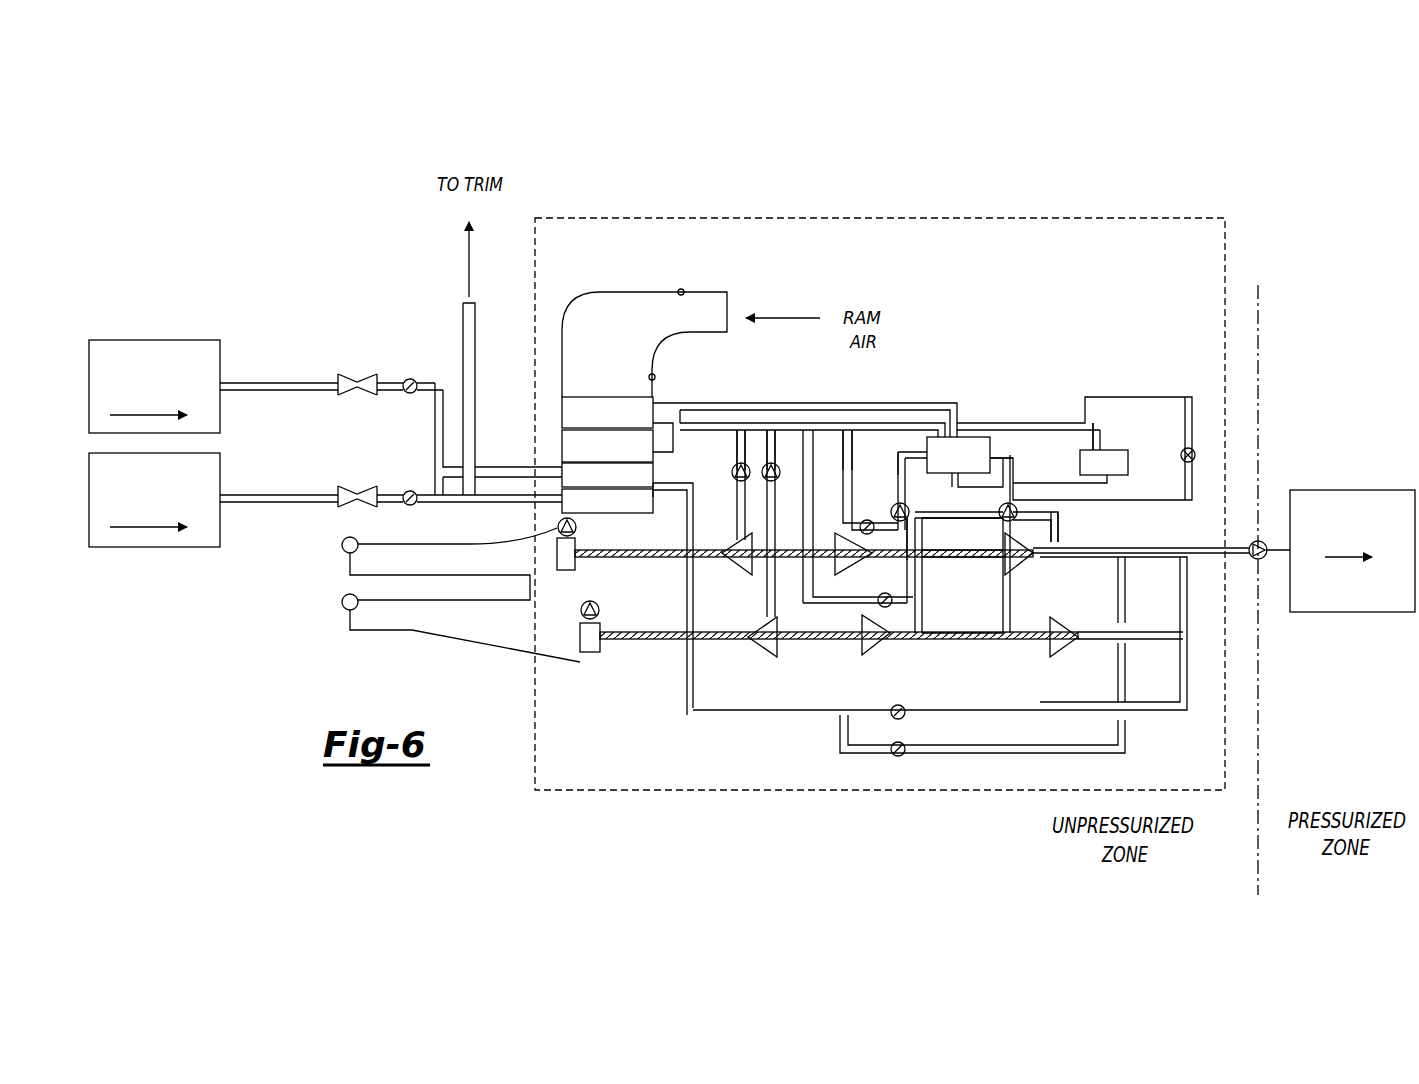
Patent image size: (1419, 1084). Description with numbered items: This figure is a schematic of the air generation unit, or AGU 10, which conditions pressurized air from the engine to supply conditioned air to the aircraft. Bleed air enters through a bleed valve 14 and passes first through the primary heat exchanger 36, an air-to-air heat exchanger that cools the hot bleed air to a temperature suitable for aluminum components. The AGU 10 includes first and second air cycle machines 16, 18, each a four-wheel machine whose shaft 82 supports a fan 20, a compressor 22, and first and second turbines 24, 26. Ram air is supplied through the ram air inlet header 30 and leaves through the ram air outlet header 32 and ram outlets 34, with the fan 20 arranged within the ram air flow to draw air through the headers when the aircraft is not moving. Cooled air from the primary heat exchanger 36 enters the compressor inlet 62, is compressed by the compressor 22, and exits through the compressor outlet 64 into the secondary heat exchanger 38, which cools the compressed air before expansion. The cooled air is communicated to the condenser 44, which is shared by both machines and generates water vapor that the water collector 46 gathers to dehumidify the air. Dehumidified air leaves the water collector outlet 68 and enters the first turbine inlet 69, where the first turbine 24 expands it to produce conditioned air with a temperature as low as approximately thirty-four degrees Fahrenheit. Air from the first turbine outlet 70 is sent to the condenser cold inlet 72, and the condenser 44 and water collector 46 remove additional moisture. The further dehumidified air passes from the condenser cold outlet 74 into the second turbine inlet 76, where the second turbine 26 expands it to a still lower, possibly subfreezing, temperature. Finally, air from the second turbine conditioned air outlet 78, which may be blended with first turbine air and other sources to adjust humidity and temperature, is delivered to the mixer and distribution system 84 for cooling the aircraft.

The AGU 10 is at (893, 206).
The bleed valve 14 is at (152, 340).
The first air cycle machine 16 is at (940, 566).
The second air cycle machine 18 is at (942, 649).
The fan 20 is at (582, 652).
The compressor 22 is at (752, 577).
The first turbine 24 is at (840, 585).
The second turbine 26 is at (1048, 647).
The ram air inlet header 30 is at (600, 313).
The ram air outlet header 32 is at (456, 650).
The ram outlets 34 is at (350, 630).
The primary heat exchanger 36 is at (562, 506).
The secondary heat exchanger 38 is at (562, 450).
The condenser 44 is at (975, 437).
The water collector 46 is at (1125, 450).
The compressor inlet 62 is at (722, 553).
The compressor outlet 64 is at (752, 535).
The water collector outlet 68 is at (1093, 440).
The first turbine inlet 69 is at (838, 535).
The first turbine outlet 70 is at (876, 553).
The condenser cold inlet 72 is at (918, 440).
The condenser cold outlet 74 is at (995, 455).
The second turbine inlet 76 is at (1005, 528).
The second turbine conditioned air outlet 78 is at (1088, 632).
The shaft 82 is at (676, 560).
The mixer and distribution system 84 is at (1335, 612).